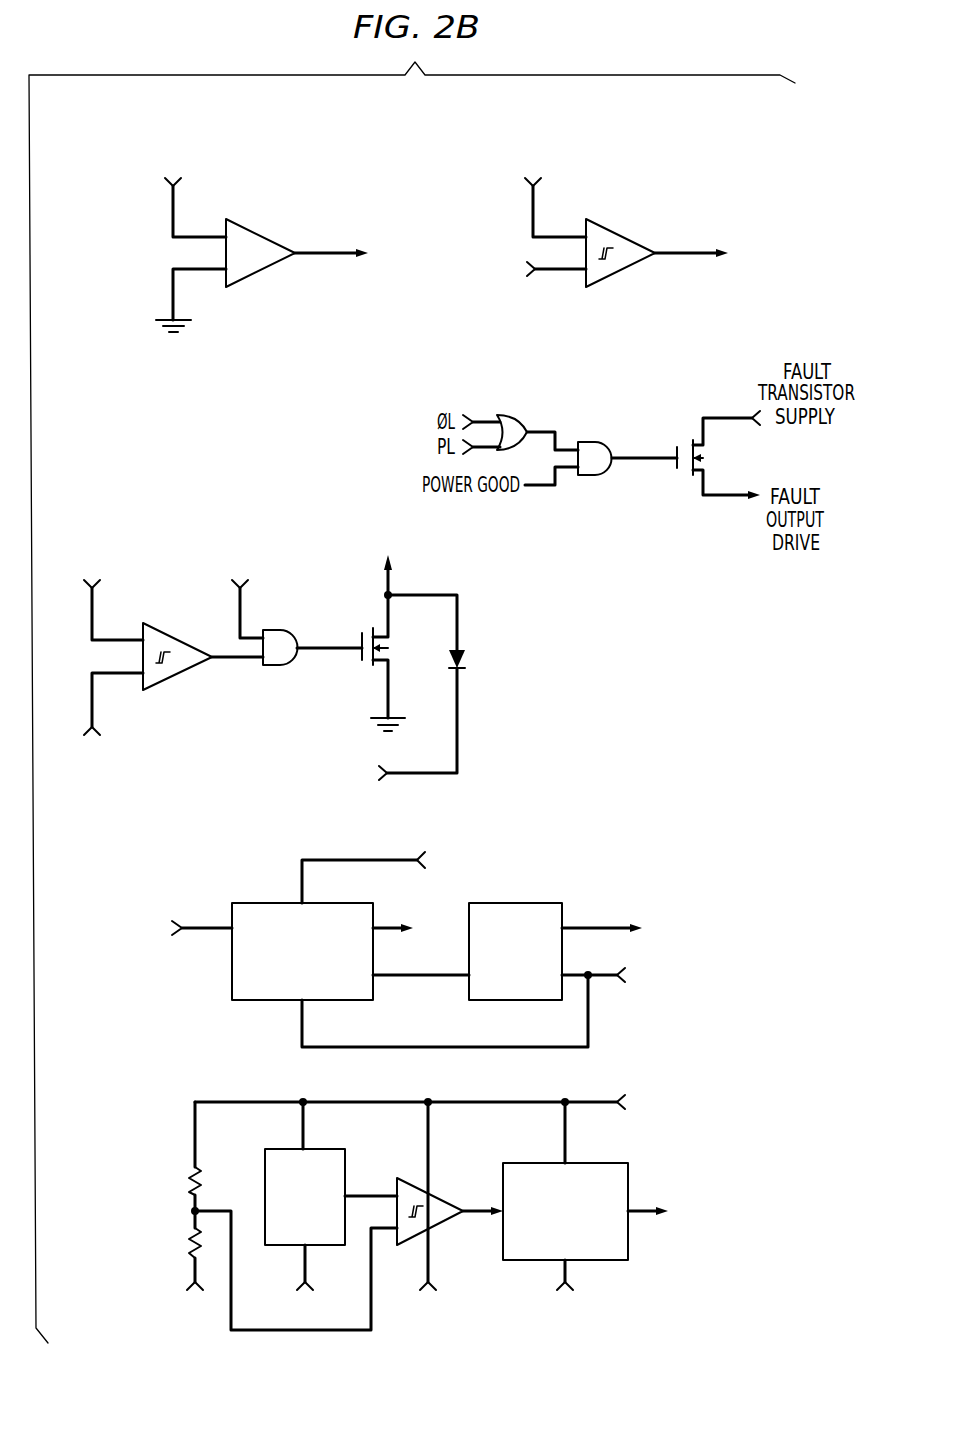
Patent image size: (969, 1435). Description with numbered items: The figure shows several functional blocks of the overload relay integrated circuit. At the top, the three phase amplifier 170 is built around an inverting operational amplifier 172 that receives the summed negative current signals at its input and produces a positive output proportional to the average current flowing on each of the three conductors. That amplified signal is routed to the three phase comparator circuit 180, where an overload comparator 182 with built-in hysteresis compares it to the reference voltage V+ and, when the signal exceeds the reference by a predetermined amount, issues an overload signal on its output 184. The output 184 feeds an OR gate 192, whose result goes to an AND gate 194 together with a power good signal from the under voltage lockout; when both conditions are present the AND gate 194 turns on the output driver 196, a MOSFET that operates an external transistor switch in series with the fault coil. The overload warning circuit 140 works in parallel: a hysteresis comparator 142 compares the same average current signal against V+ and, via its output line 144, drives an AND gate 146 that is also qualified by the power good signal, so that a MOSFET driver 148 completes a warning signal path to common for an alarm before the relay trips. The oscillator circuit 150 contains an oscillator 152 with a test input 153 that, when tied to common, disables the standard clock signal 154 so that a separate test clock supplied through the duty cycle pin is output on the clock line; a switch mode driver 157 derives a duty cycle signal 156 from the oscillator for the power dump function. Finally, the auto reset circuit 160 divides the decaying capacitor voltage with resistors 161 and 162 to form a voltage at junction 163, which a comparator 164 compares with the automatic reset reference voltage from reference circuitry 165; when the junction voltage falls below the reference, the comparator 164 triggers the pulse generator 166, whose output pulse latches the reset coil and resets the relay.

The three phase amplifier 170 is at (258, 168).
The inverting operational amplifier 172 is at (275, 238).
The three phase comparator circuit 180 is at (618, 168).
The overload comparator 182 is at (632, 238).
The output of the overload comparator 184 is at (687, 256).
The OR gate 192 is at (512, 417).
The AND gate 194 is at (598, 440).
The output driver 196 is at (702, 450).
The overload warning circuit 140 is at (281, 538).
The comparator 142 is at (162, 623).
The comparator output line 144 is at (235, 660).
The AND gate 146 is at (277, 630).
The MOSFET driver 148 is at (360, 640).
The oscillator circuit 150 is at (528, 826).
The oscillator 152 is at (232, 982).
The test input 153 is at (193, 925).
The clock signal 154 is at (383, 927).
The duty cycle signal 156 is at (597, 923).
The switch mode driver 157 is at (542, 902).
The auto reset circuit 160 is at (538, 1320).
The resistor 161 is at (190, 1177).
The resistor 162 is at (190, 1237).
The junction 163 is at (212, 1210).
The comparator 164 is at (443, 1197).
The reference circuitry 165 is at (327, 1148).
The pulse generator 166 is at (578, 1162).